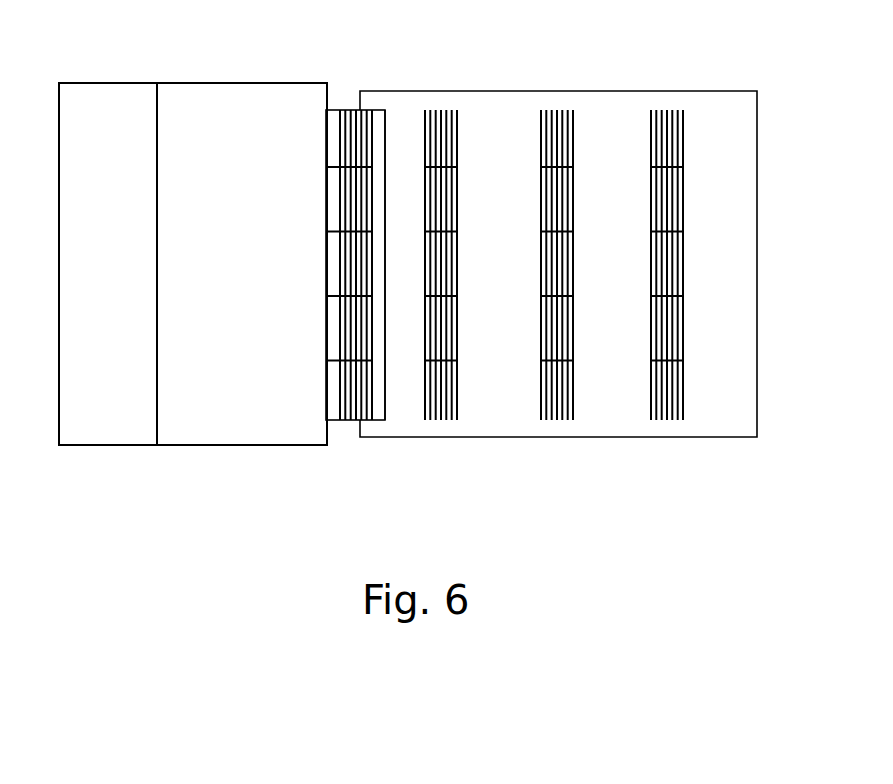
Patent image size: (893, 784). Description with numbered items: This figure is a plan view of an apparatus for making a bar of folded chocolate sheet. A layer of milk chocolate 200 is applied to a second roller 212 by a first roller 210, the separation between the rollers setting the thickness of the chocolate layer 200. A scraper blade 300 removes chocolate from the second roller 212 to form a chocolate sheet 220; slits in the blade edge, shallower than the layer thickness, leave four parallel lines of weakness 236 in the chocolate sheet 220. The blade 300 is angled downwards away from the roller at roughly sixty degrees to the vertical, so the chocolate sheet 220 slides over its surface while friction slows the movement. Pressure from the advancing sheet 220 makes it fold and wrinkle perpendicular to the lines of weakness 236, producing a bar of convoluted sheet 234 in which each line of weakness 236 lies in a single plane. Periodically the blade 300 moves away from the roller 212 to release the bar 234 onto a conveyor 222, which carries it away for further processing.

The layer of milk chocolate 200 is at (262, 282).
The first roller 210 is at (103, 422).
The second roller 212 is at (248, 446).
The chocolate sheet 220 is at (333, 122).
The conveyor 222 is at (715, 130).
The bar of convoluted sheet 234 is at (360, 420).
The lines of weakness 236 is at (329, 366).
The scraper blade 300 is at (380, 138).